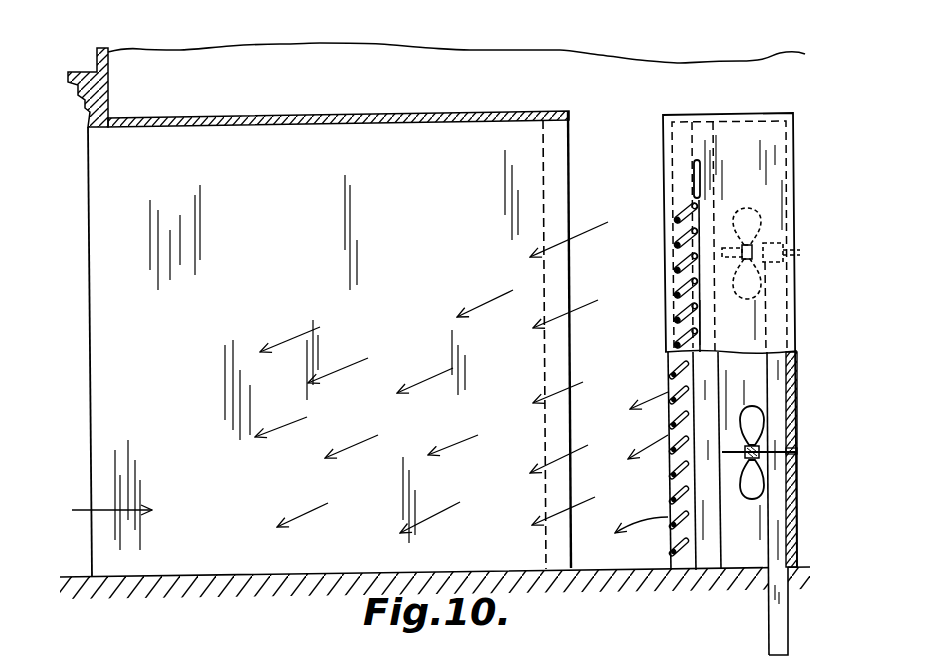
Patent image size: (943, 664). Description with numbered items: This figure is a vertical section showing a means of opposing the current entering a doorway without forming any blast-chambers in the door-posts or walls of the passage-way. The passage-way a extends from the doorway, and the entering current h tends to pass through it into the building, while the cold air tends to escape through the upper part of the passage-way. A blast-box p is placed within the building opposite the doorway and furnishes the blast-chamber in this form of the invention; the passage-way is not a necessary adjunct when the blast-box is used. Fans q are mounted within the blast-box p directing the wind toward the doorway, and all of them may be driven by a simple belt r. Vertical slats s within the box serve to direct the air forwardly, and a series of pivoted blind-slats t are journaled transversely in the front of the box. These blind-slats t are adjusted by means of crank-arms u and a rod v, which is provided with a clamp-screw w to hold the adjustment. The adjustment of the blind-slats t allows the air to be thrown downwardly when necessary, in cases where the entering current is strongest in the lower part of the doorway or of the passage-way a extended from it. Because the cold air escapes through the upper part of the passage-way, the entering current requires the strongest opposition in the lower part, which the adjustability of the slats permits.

The drying chamber a is at (378, 344).
The air inlet h is at (130, 369).
The blast-box p is at (757, 114).
The vertical slats s is at (712, 143).
The rod v is at (702, 172).
The clamp-screw w is at (697, 188).
The crank-arms u is at (674, 318).
The pivoted blind-slats t is at (675, 498).
The fans q is at (745, 404).
The belt r is at (790, 602).